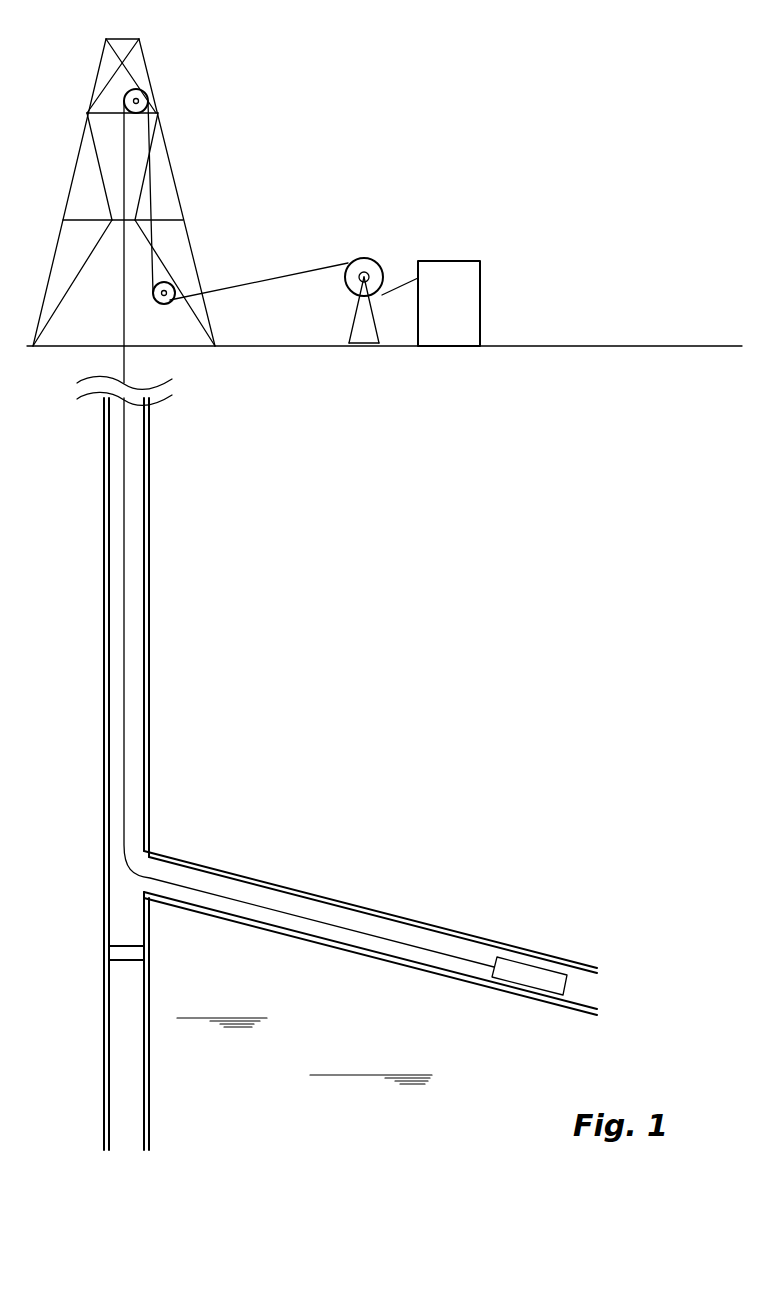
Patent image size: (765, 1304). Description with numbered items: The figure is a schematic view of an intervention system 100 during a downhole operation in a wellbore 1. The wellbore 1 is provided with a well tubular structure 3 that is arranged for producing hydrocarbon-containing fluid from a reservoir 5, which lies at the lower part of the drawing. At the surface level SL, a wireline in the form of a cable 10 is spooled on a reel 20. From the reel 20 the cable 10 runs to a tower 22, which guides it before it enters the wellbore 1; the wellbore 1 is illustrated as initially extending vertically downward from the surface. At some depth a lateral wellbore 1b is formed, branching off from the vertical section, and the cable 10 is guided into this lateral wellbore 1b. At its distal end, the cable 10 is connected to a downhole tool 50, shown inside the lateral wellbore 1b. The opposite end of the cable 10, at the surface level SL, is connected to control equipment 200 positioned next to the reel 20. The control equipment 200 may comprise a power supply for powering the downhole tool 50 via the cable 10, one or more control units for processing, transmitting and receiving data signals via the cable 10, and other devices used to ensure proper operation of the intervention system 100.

The tower 22 is at (143, 50).
The cable 10 is at (232, 287).
The reel 20 is at (370, 263).
The control equipment 200 is at (480, 285).
The surface level SL is at (658, 345).
The well tubular structure 3 is at (103, 637).
The wellbore 1 is at (178, 693).
The lateral wellbore 1b is at (310, 907).
The intervention system 100 is at (484, 862).
The downhole tool 50 is at (518, 970).
The reservoir 5 is at (304, 1051).